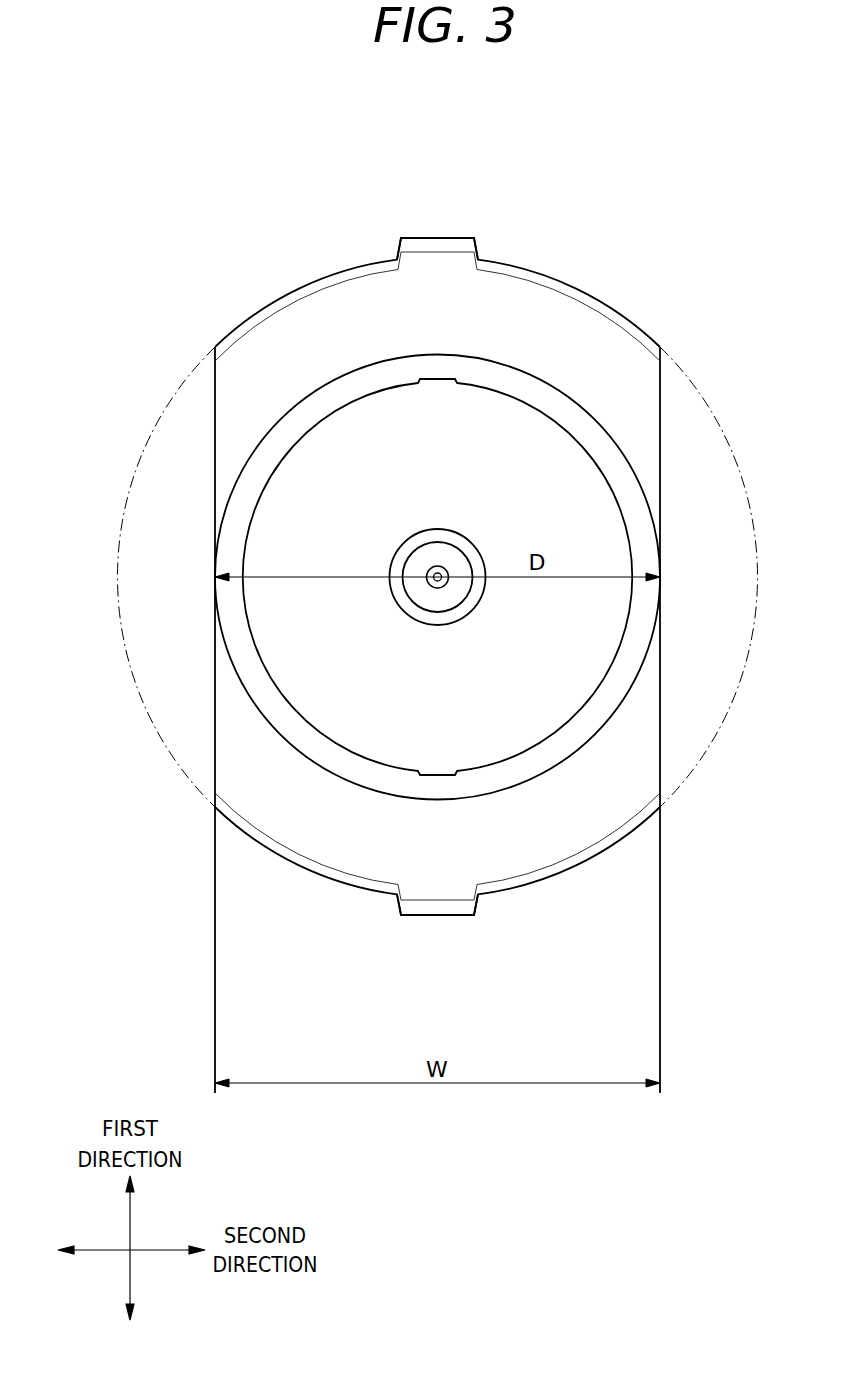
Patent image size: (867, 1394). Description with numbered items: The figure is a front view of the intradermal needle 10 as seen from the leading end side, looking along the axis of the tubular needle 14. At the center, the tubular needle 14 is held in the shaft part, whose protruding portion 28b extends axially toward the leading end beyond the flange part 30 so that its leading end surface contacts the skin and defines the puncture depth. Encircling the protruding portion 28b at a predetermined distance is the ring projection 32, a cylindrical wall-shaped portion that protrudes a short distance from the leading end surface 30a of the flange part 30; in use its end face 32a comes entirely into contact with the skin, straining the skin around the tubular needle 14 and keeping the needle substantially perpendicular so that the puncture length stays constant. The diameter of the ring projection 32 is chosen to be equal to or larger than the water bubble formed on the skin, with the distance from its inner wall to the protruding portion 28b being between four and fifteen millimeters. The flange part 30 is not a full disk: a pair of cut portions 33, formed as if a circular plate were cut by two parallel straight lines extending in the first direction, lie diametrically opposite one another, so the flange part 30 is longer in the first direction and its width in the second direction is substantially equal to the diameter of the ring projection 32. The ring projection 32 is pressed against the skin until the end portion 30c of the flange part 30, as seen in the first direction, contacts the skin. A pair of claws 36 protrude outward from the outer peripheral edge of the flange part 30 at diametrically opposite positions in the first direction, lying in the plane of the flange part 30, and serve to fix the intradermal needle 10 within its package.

The intradermal needle 10 is at (205, 203).
The tubular needle 14 is at (438, 578).
The protruding portion 28b is at (438, 537).
The flange part 30 is at (437, 577).
The leading end surface 30a is at (333, 313).
The end portion 30c is at (523, 267).
The ring projection 32 is at (472, 801).
The end face 32a is at (558, 745).
The cut portions 33 is at (212, 465).
The claws 36 is at (434, 234).